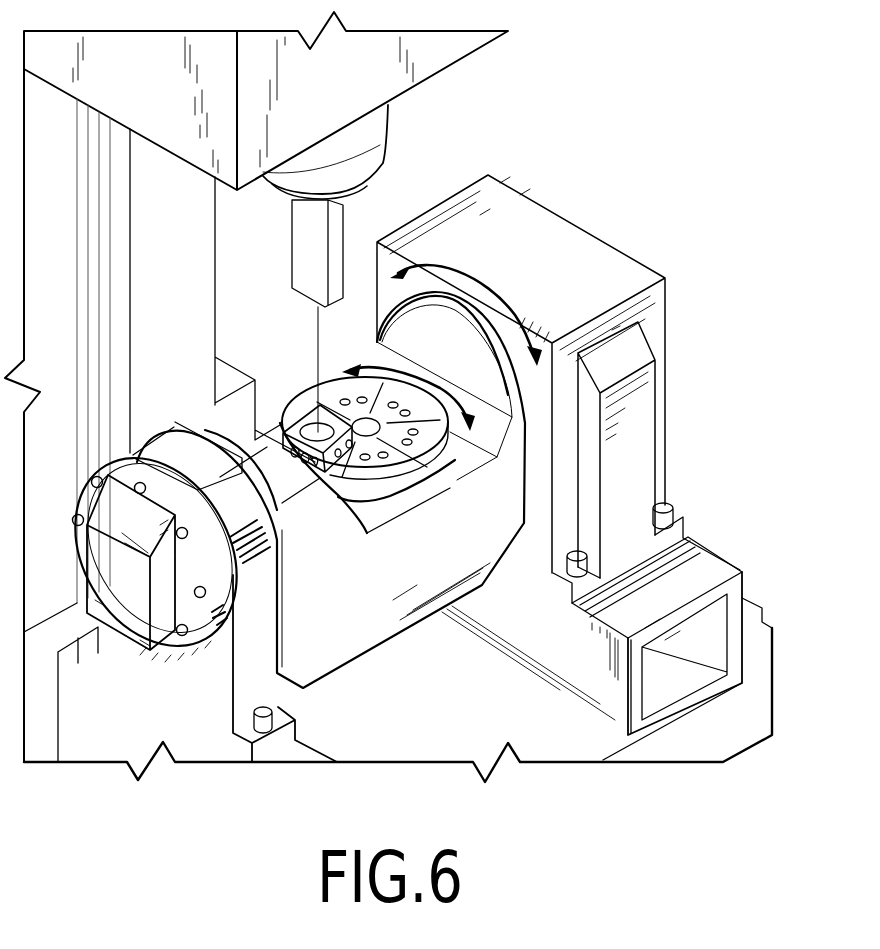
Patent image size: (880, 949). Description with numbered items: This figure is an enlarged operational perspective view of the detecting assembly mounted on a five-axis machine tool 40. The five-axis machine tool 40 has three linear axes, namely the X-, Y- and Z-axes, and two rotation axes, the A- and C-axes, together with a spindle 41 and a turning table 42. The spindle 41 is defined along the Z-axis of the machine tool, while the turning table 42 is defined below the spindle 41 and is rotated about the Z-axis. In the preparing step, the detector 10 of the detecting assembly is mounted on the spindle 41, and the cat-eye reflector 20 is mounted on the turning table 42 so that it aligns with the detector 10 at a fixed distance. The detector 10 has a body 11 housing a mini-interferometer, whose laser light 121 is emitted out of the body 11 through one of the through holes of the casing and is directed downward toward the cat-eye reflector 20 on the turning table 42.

The detector 10 is at (357, 213).
The body 11 is at (320, 254).
The laser light 121 is at (316, 335).
The cat-eye reflector 20 is at (344, 463).
The five-axis machine tool 40 is at (687, 367).
The spindle 41 is at (373, 125).
The turning table 42 is at (433, 467).